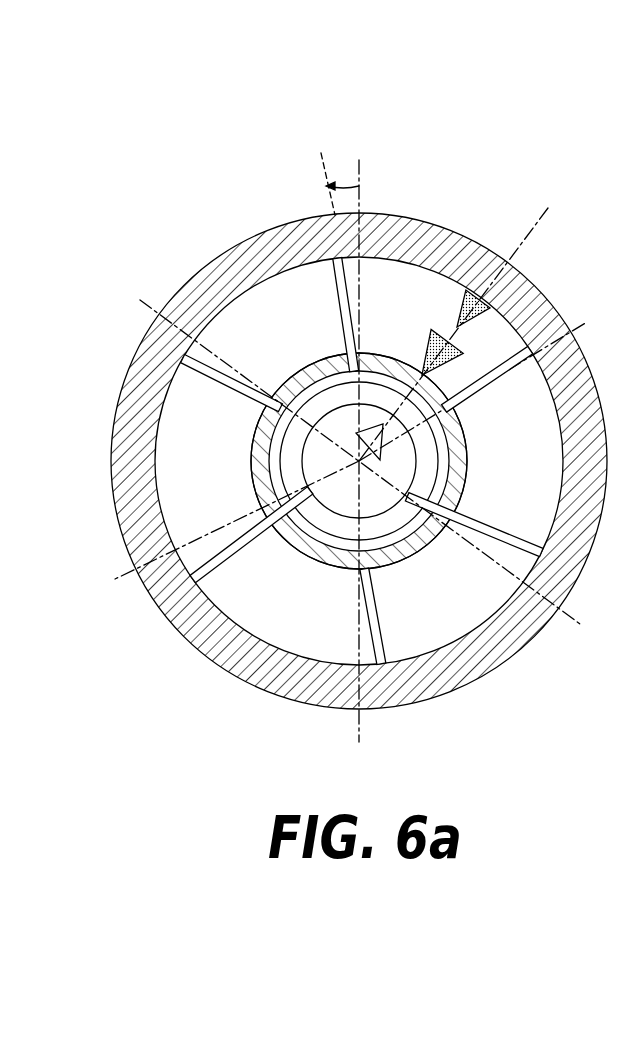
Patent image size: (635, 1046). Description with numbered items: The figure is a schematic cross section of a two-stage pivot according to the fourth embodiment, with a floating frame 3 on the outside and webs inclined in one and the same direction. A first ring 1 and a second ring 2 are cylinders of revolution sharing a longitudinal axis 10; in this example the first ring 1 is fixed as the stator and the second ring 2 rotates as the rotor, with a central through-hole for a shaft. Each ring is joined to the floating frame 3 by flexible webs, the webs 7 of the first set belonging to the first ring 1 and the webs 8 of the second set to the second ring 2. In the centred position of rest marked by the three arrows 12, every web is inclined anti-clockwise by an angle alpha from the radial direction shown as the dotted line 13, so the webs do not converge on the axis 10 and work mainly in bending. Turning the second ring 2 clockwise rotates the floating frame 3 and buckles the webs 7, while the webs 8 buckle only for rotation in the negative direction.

The first ring 1 is at (395, 540).
The second ring 2 is at (297, 549).
The floating frame 3 is at (528, 635).
The flexible webs of the first set 7 is at (356, 335).
The flexible webs of the second set 8 is at (218, 362).
The longitudinal axis 10 is at (359, 458).
The arrows 12 is at (535, 290).
The dotted line 13 is at (360, 180).